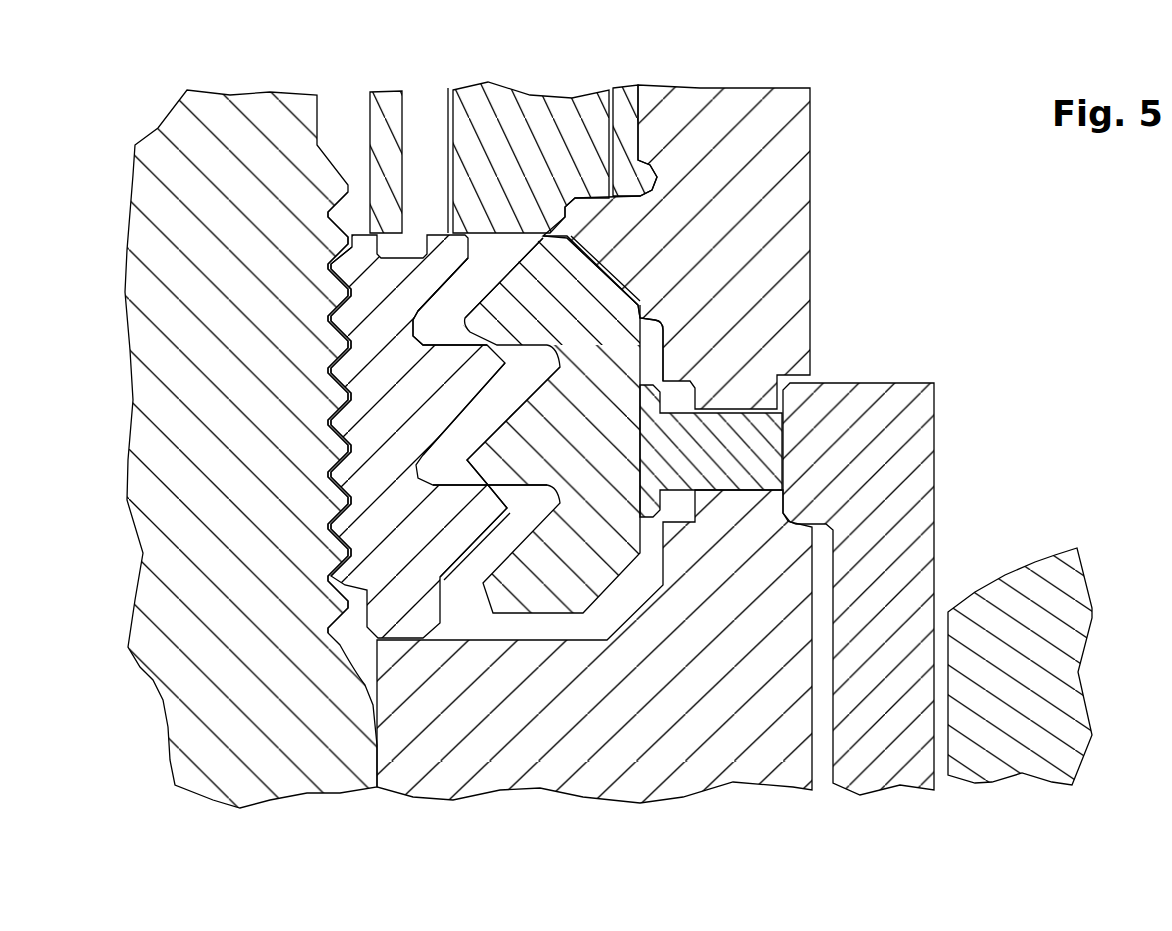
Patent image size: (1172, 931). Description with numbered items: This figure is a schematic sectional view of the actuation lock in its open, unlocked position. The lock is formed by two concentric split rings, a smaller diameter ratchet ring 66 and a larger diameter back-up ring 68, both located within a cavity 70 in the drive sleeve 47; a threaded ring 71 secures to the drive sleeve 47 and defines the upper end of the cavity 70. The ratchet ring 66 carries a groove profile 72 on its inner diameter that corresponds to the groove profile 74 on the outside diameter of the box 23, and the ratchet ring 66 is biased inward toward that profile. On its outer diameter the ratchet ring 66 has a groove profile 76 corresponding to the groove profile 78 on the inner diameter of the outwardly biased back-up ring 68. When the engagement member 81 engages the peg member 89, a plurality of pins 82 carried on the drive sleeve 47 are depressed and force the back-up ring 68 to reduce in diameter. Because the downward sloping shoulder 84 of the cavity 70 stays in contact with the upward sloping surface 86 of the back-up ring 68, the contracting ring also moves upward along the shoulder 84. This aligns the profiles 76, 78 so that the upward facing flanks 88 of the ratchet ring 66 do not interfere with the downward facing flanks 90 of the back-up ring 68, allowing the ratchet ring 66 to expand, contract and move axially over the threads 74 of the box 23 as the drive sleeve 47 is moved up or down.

The box 23 is at (197, 690).
The drive sleeve 47 is at (783, 198).
The ratchet ring 66 is at (367, 513).
The back-up ring 68 is at (604, 523).
The cavity 70 is at (455, 613).
The threaded ring 71 is at (558, 113).
The groove profile 72 is at (330, 297).
The groove profile 74 is at (352, 382).
The groove profile 76 is at (413, 323).
The groove profile 78 is at (533, 390).
The engagement member 81 is at (1058, 573).
The pins 82 is at (753, 442).
The downward sloping shoulder 84 is at (650, 317).
The upward sloping surface 86 is at (647, 255).
The upward facing flanks 88 is at (461, 463).
The peg member 89 is at (918, 447).
The downward facing flanks 90 is at (517, 483).